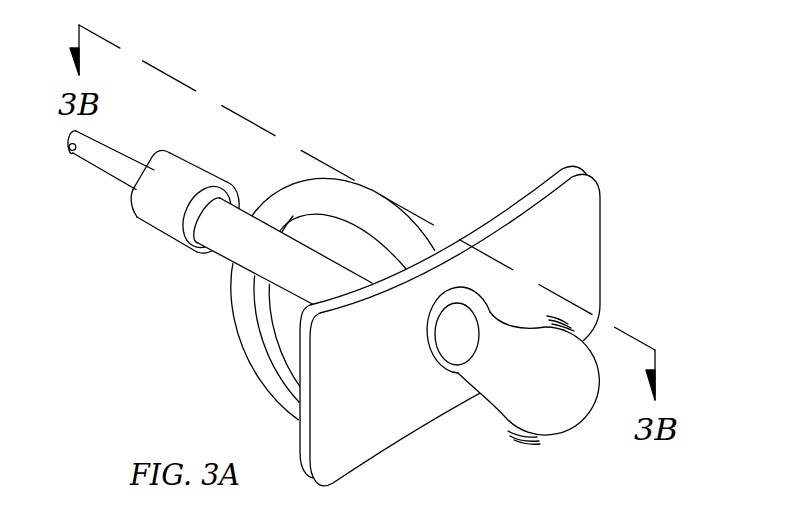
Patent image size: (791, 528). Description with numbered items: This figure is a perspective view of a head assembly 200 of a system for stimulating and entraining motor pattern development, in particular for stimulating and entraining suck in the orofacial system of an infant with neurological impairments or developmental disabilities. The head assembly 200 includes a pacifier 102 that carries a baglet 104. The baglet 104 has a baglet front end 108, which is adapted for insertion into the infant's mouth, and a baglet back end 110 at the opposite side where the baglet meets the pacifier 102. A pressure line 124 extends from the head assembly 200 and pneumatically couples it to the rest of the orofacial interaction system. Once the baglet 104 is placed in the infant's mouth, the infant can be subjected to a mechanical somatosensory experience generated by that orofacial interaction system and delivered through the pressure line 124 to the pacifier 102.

The head assembly 200 is at (505, 112).
The pacifier 102 is at (534, 456).
The baglet 104 is at (578, 369).
The baglet front end 108 is at (582, 443).
The baglet back end 110 is at (424, 347).
The pressure line 124 is at (100, 168).